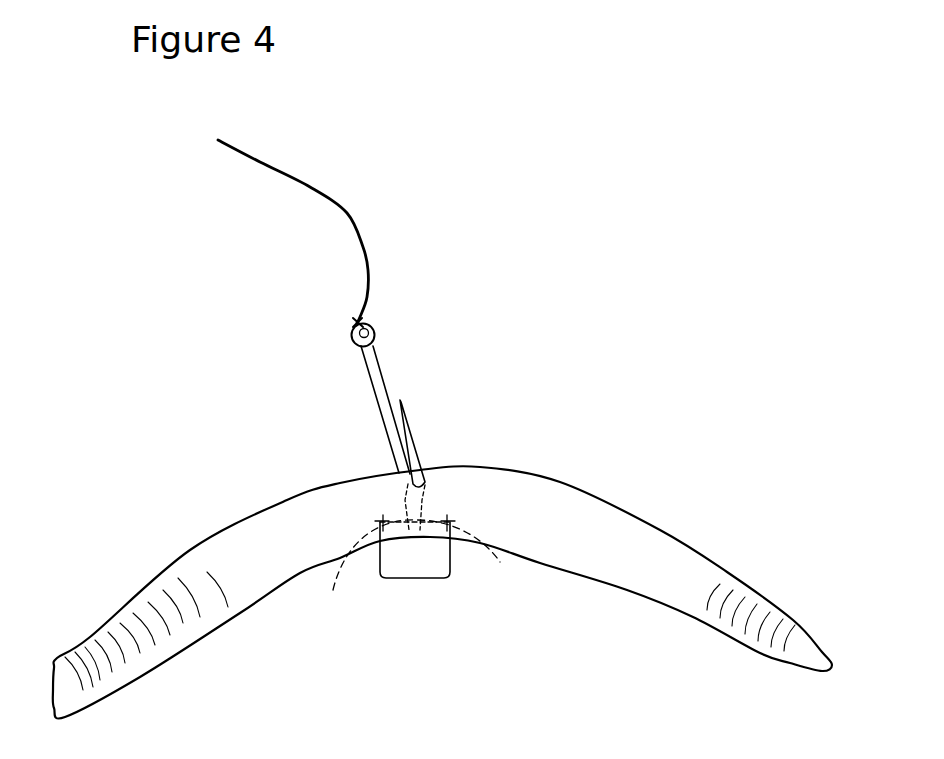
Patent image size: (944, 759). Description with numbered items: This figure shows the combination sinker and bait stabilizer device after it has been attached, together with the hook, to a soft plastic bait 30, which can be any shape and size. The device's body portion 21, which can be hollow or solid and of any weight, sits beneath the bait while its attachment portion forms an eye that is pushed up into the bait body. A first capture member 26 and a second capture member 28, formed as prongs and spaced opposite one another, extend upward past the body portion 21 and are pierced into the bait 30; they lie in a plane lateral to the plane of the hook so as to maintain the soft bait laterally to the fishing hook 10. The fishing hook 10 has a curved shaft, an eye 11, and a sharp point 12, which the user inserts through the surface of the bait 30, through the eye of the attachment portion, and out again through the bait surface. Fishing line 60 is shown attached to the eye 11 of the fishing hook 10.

The fishing hook 10 is at (388, 378).
The eye 11 is at (375, 331).
The sharp point 12 is at (405, 412).
The body portion 21 is at (425, 567).
The first capture member 26 is at (450, 554).
The second capture member 28 is at (410, 572).
The soft plastic bait 30 is at (228, 631).
The fishing line 60 is at (356, 226).